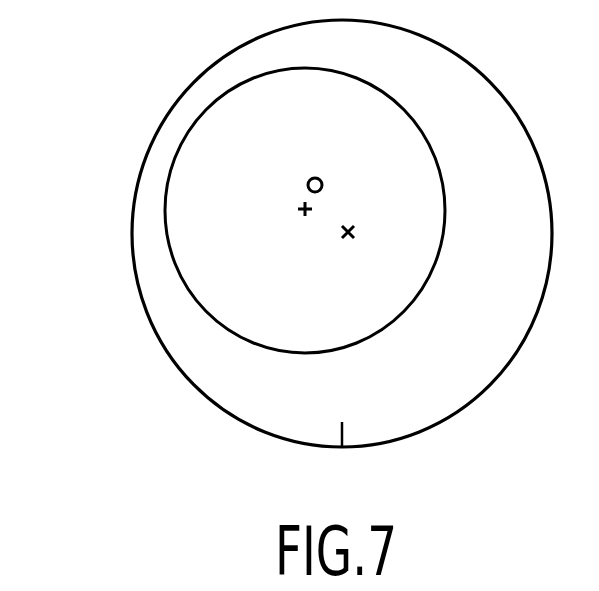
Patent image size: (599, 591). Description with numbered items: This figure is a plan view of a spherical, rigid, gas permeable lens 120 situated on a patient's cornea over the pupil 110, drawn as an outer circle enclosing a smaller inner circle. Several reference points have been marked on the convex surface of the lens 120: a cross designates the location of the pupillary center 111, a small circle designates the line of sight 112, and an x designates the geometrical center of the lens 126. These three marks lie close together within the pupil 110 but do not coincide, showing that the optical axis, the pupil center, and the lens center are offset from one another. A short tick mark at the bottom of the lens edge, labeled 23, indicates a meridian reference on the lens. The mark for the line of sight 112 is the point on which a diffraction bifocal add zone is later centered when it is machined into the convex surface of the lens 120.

The spherical, rigid, gas permeable lens 120 is at (170, 105).
The pupil 110 is at (163, 219).
The line of sight 112 is at (323, 186).
The pupillary center 111 is at (300, 213).
The geometrical center of the lens 126 is at (352, 230).
The index mark 23 is at (338, 433).